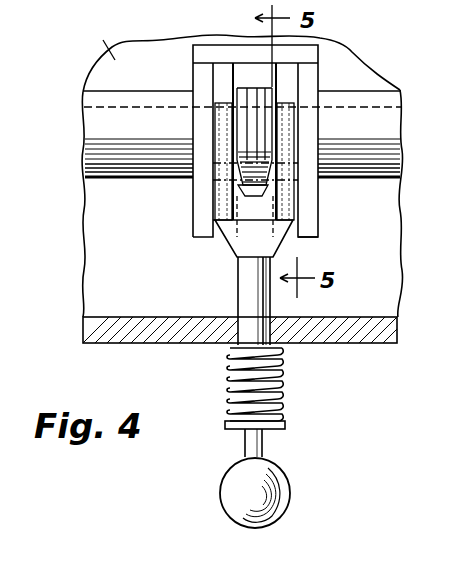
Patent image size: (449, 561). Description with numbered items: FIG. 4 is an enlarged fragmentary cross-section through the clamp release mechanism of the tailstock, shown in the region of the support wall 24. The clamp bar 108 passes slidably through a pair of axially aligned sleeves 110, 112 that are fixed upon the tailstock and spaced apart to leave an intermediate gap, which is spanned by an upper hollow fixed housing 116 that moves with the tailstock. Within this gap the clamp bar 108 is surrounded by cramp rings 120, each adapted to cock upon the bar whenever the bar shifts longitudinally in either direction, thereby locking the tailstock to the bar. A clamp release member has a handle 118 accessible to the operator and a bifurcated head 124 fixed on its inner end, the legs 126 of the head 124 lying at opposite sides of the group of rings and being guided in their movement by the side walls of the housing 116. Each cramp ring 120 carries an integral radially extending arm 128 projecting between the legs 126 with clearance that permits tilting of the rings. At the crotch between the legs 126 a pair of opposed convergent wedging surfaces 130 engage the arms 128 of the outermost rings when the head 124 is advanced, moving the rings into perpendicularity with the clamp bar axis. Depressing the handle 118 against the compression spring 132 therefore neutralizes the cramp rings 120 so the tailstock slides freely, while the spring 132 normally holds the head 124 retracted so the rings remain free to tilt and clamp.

The support wall 24 is at (91, 37).
The clamp bar 108 is at (90, 107).
The sleeve 110 is at (97, 91).
The sleeve 112 is at (388, 91).
The housing 116 is at (318, 215).
The handle 118 is at (262, 448).
The cramp ring 120 is at (252, 87).
The bifurcated head 124 is at (285, 215).
The legs 126 is at (233, 130).
The arm 128 is at (245, 128).
The wedging surfaces 130 is at (238, 190).
The compression spring 132 is at (280, 392).